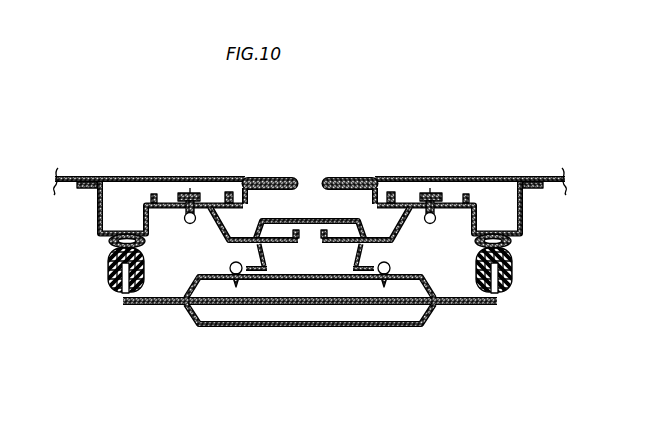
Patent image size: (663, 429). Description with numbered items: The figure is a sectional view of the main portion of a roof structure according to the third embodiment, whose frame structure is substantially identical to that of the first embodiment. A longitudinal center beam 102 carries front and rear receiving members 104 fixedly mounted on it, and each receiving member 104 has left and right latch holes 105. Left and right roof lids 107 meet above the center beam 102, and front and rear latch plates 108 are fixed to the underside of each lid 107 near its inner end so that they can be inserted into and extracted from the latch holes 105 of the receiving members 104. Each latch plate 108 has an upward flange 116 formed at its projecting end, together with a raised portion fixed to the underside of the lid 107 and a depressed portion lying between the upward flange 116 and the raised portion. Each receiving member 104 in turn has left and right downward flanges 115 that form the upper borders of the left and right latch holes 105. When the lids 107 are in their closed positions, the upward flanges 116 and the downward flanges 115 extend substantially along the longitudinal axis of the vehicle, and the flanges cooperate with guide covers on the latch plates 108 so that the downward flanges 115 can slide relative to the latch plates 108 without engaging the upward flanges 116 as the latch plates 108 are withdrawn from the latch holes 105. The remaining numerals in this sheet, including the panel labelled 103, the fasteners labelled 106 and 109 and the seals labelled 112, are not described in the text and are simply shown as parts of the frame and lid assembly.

The longitudinal center beam 102 is at (185, 323).
The mounting panel 103 is at (78, 310).
The receiving member 104 is at (313, 217).
The latch hole 105 is at (261, 246).
The fastening screws 106 is at (237, 261).
The roof lid 107 is at (86, 179).
The latch plate 108 is at (287, 244).
The bolt and nut 109 is at (187, 222).
The seal ring 112 is at (108, 243).
The downward flange 115 is at (251, 197).
The upward flange 116 is at (322, 240).